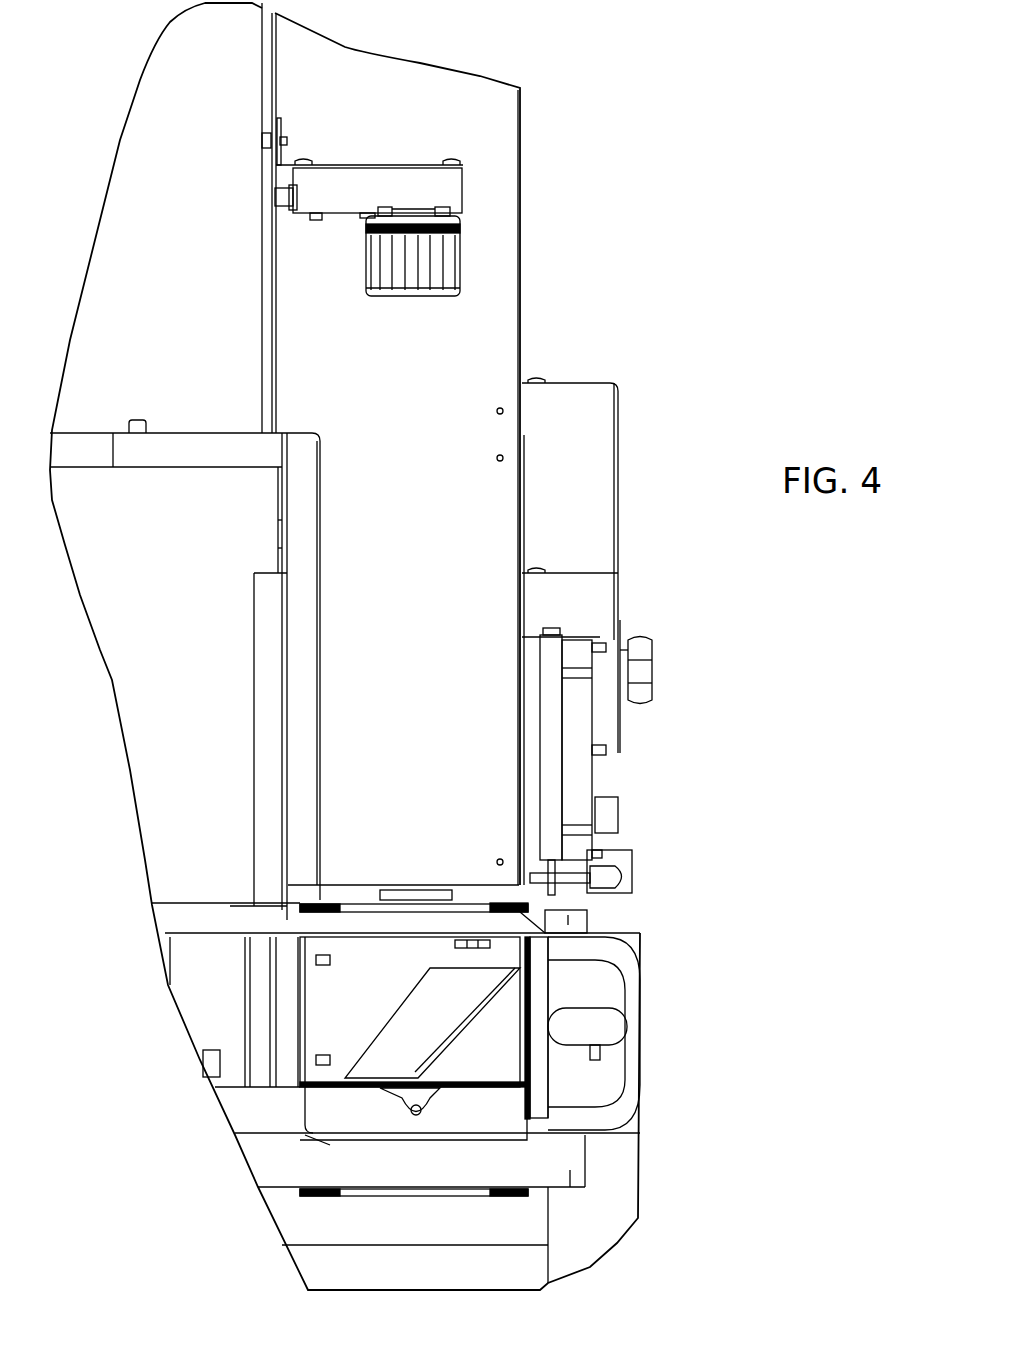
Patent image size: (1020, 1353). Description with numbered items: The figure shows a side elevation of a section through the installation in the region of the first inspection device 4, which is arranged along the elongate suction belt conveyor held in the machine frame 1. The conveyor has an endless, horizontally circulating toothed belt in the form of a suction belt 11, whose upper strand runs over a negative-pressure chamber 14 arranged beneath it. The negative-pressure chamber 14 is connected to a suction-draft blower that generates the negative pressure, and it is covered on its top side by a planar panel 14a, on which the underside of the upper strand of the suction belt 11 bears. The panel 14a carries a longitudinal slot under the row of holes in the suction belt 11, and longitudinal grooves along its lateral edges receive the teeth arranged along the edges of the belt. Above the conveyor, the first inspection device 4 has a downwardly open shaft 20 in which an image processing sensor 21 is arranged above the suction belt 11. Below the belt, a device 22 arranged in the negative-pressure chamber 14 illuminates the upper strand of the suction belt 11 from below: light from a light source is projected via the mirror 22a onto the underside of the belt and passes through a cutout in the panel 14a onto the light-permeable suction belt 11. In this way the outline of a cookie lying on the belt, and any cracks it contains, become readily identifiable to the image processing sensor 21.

The machine frame 1 is at (168, 919).
The first inspection device 4 is at (522, 126).
The suction belt 11 is at (520, 897).
The negative-pressure chamber 14 is at (502, 1055).
The planar panel 14a is at (523, 921).
The shaft 20 is at (490, 360).
The image processing sensor 21 is at (435, 273).
The illuminating device 22 is at (478, 1020).
The mirror 22a is at (458, 1002).